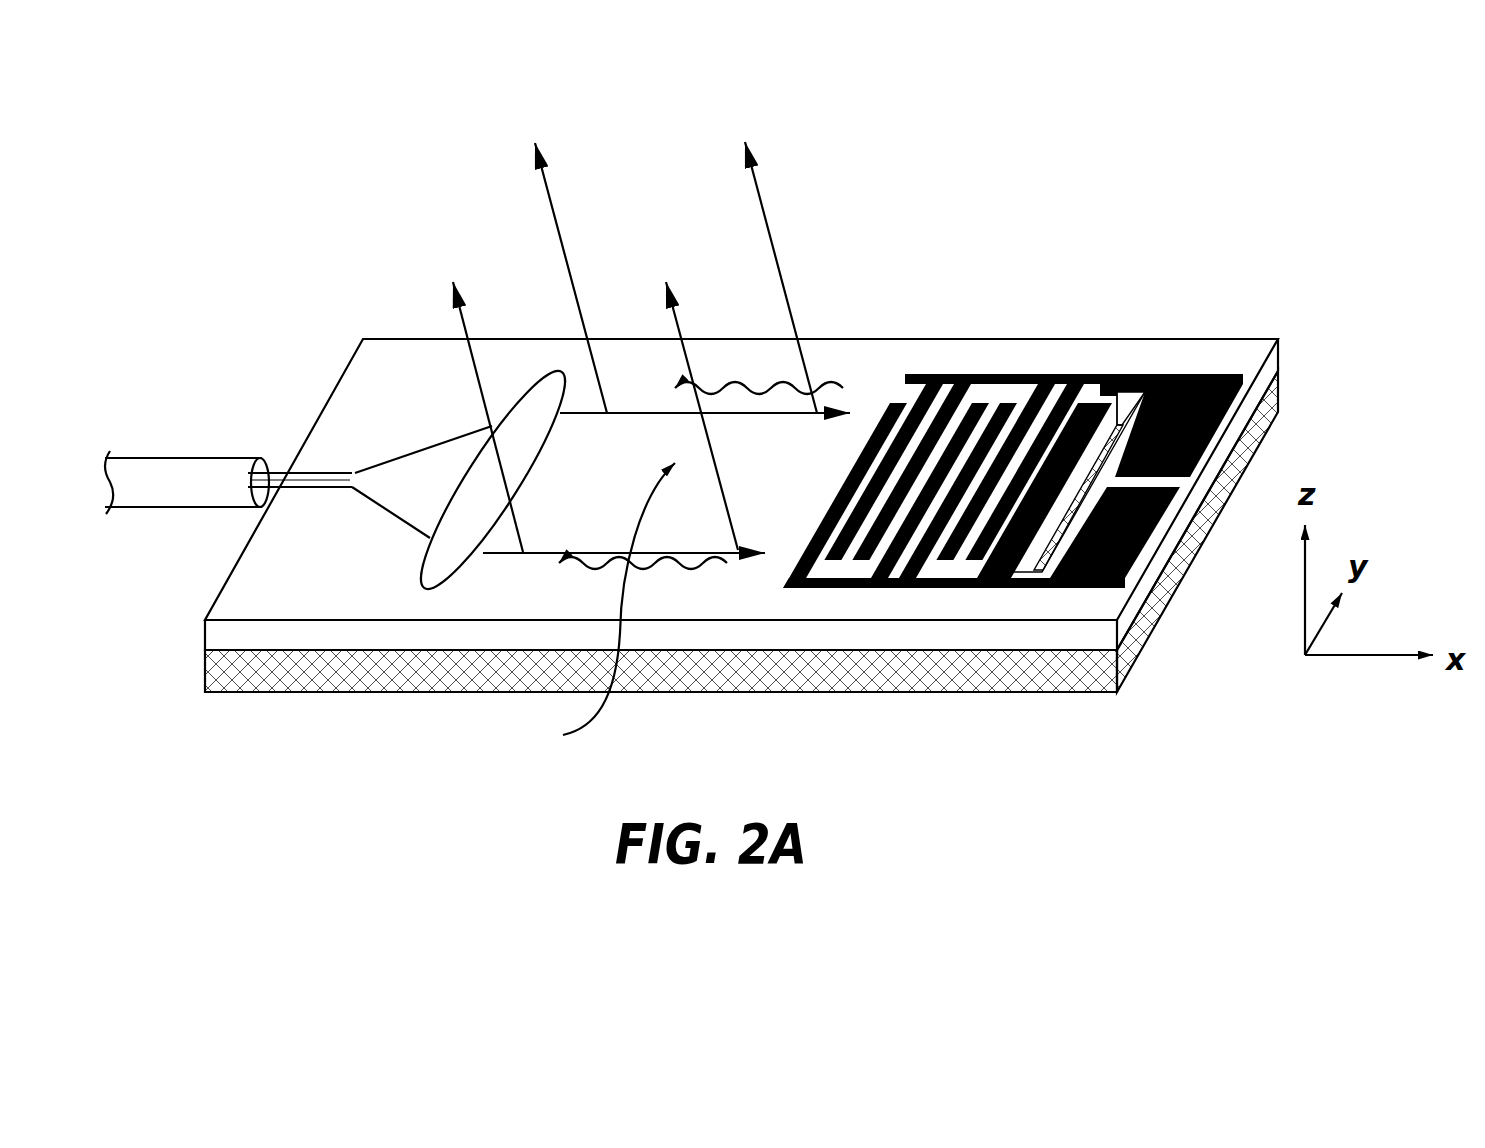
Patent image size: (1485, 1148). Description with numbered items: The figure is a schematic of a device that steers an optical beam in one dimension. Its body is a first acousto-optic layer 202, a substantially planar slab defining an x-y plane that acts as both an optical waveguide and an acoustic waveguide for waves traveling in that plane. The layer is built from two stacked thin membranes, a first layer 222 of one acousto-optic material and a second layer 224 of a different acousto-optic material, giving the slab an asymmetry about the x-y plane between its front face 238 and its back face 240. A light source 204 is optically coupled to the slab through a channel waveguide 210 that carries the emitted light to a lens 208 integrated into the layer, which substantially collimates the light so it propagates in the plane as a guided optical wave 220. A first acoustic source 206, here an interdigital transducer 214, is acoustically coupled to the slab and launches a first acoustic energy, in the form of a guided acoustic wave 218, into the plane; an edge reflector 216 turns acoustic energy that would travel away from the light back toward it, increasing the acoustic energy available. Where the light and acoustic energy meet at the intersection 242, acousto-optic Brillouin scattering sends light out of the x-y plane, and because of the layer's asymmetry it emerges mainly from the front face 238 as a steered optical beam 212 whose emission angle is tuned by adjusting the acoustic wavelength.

The first acousto-optic layer 202 is at (811, 555).
The light source 204 is at (195, 460).
The first acoustic source 206 is at (1042, 323).
The lens 208 is at (552, 375).
The channel waveguide 210 is at (342, 482).
The steered optical beam 212 is at (547, 200).
The interdigital transducer 214 is at (932, 377).
The edge reflector 216 is at (1125, 402).
The guided acoustic wave 218 is at (755, 390).
The guided optical wave 220 is at (633, 413).
The first layer 222 is at (1135, 608).
The second layer 224 is at (1135, 650).
The front face 238 is at (1108, 607).
The back face 240 is at (1058, 697).
The intersection 242 is at (601, 606).